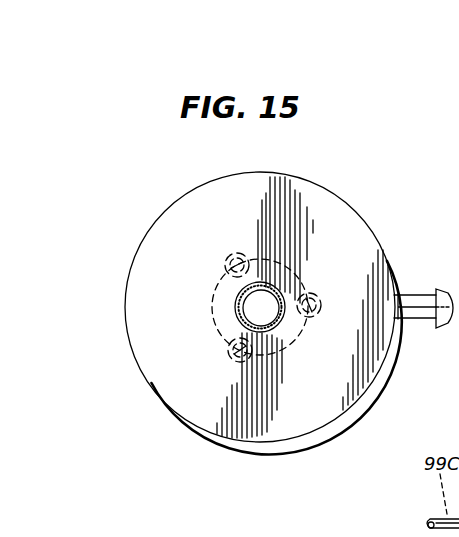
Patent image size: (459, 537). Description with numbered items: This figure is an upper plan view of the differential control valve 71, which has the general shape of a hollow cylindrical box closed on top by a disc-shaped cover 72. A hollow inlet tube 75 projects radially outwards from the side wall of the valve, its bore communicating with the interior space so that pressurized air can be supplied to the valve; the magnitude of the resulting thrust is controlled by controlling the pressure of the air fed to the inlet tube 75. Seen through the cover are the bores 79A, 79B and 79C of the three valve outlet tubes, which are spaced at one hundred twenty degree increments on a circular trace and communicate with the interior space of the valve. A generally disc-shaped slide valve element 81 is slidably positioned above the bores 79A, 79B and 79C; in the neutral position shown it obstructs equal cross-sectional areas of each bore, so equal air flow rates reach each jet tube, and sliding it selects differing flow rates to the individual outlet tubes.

The control valve 71 is at (331, 178).
The disc-shaped cover 72 is at (238, 186).
The hollow inlet tube 75 is at (412, 320).
The bore of valve outlet tube 79A is at (232, 358).
The bore of valve outlet tube 79B is at (320, 300).
The bore of valve outlet tube 79C is at (228, 256).
The disc-shaped slide valve element 81 is at (214, 324).